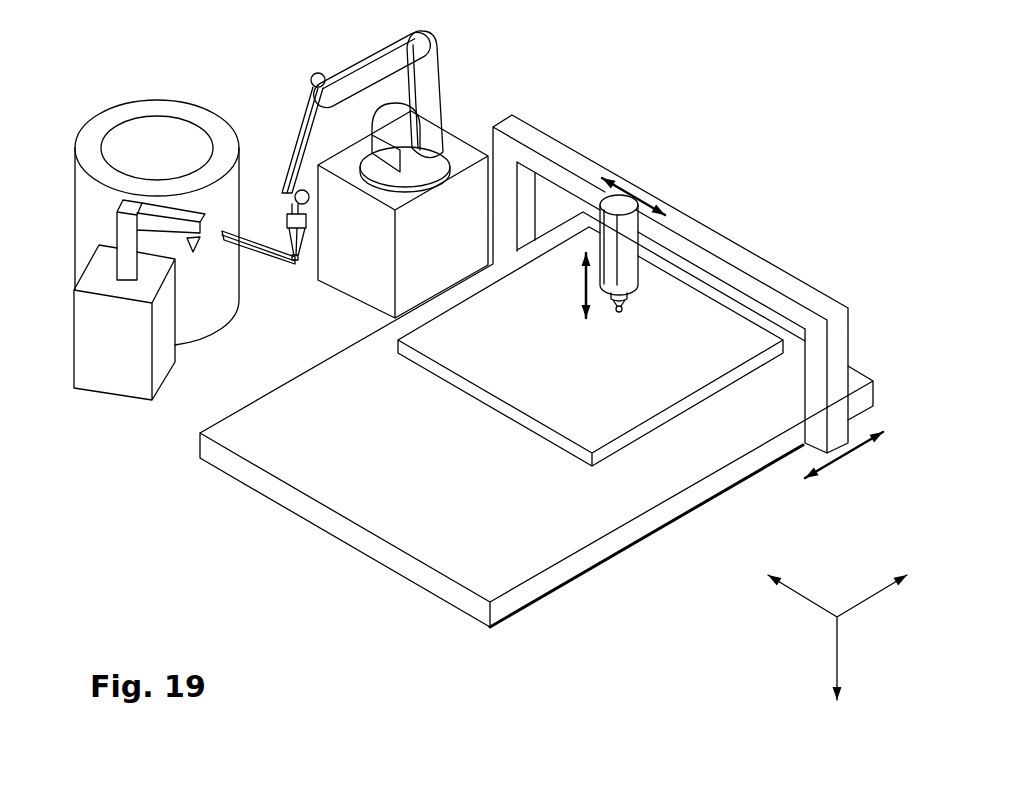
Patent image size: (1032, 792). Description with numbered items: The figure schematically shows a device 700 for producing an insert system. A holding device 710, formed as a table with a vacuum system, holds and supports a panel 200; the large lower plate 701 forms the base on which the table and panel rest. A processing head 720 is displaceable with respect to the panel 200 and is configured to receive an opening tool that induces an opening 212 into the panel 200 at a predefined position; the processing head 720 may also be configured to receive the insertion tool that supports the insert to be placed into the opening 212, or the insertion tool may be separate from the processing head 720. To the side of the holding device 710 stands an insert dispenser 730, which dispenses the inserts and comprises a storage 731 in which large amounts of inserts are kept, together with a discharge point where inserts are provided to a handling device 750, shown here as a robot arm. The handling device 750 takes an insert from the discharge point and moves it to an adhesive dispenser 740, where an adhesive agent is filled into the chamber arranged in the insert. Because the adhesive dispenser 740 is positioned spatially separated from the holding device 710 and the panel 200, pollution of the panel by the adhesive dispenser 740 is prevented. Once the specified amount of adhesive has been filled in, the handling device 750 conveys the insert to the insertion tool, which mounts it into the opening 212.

The device 700 is at (800, 45).
The base plate 701 is at (410, 530).
The panel 200 is at (520, 383).
The holding device 710 is at (743, 213).
The processing head 720 is at (632, 300).
The opening 212 is at (622, 313).
The handling device 750 is at (463, 85).
The insert dispenser 730 is at (124, 85).
The storage 731 is at (293, 257).
The adhesive dispenser 740 is at (105, 362).